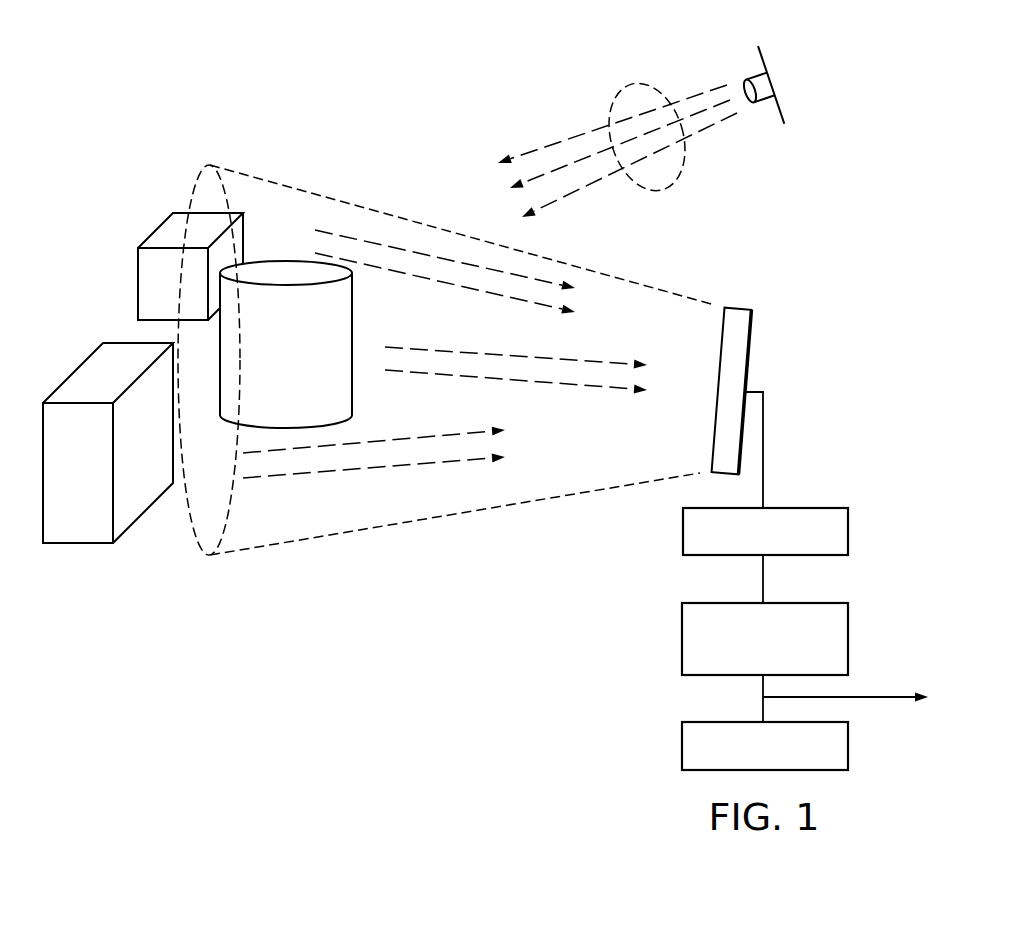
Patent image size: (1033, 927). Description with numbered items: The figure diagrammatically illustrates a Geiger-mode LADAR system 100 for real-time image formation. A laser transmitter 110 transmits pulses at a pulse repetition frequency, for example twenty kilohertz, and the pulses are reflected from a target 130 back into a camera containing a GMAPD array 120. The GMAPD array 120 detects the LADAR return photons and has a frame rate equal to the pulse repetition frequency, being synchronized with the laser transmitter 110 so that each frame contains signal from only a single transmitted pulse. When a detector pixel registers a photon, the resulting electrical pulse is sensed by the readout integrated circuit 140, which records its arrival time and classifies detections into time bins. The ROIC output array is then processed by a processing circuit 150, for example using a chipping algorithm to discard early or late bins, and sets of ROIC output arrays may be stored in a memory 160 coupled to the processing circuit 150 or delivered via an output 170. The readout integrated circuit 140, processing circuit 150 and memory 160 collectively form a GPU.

The LADAR system 100 is at (284, 71).
The laser transmitter 110 is at (757, 75).
The GMAPD array 120 is at (737, 308).
The target 130 is at (95, 216).
The readout integrated circuit (ROIC) 140 is at (683, 533).
The processing circuit 150 is at (682, 638).
The memory 160 is at (682, 745).
The output 170 is at (872, 700).